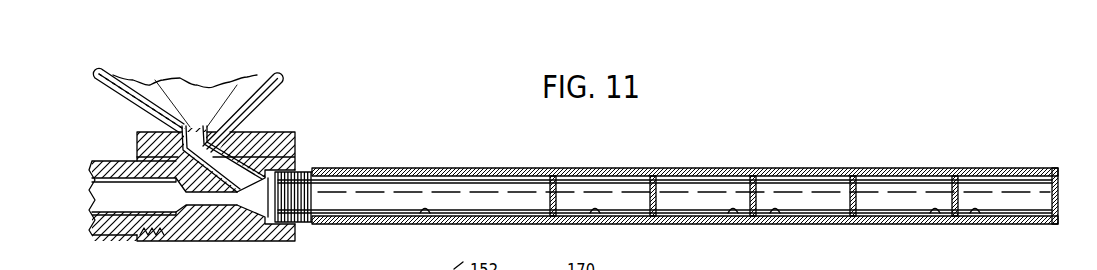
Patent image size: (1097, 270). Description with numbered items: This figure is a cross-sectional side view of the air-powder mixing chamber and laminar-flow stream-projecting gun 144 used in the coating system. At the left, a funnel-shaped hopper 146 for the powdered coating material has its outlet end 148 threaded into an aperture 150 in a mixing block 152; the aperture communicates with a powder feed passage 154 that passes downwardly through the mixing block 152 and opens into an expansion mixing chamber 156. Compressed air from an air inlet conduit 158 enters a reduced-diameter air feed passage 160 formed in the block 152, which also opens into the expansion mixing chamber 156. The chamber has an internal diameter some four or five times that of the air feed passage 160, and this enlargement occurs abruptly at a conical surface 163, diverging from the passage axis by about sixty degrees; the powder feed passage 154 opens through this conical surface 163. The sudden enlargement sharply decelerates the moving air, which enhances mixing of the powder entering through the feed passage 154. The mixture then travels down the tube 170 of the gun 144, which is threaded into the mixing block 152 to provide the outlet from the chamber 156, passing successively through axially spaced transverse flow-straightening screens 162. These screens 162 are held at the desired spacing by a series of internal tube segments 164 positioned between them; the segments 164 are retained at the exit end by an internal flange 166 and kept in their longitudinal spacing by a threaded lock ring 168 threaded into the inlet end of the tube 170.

The stream-projecting gun 144 is at (430, 153).
The funnel-shaped hopper 146 is at (257, 95).
The outlet end 148 is at (193, 127).
The aperture 150 is at (180, 138).
The mixing block 152 is at (295, 148).
The powder feed passage 154 is at (287, 157).
The expansion mixing chamber 156 is at (273, 204).
The air inlet conduit 158 is at (132, 198).
The air feed passage 160 is at (200, 206).
The flow-straightening screens 162 is at (557, 186).
The conical surface 163 is at (253, 200).
The internal tube segments 164 is at (421, 215).
The internal flange 166 is at (1058, 218).
The threaded lock ring 168 is at (323, 201).
The tube 170 is at (373, 170).